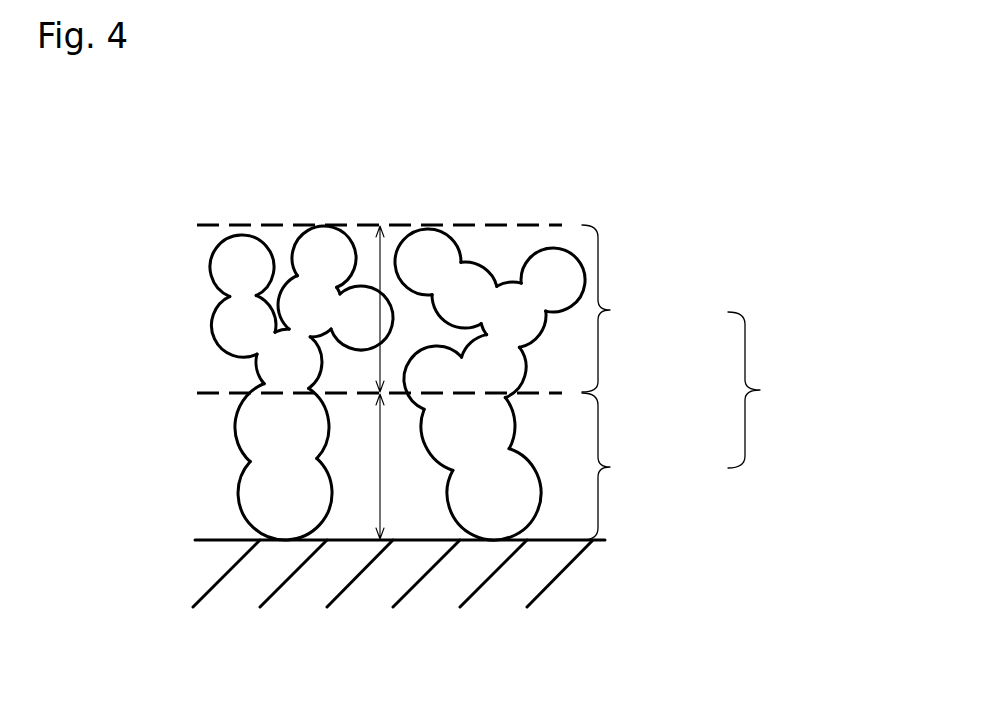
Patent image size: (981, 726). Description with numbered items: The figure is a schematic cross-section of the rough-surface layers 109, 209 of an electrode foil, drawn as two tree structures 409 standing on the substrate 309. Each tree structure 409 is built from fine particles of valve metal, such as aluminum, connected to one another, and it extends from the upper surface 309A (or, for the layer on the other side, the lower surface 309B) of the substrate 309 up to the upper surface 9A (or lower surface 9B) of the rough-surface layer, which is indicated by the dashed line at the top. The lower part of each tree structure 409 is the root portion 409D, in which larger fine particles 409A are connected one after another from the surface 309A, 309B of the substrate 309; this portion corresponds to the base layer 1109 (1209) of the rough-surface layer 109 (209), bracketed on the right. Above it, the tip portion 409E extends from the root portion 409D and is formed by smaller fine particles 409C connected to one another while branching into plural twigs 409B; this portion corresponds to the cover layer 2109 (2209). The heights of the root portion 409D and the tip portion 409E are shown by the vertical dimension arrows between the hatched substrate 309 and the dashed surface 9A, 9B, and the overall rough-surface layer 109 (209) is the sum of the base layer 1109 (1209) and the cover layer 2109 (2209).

The tree structure 409 is at (370, 175).
The fine particle 409A is at (247, 487).
The twig 409B is at (317, 298).
The fine particle 409C is at (280, 348).
The root portion 409D is at (378, 488).
The tip portion 409E is at (377, 277).
The upper surface 9A is at (317, 206).
The lower surface 9B is at (217, 224).
The substrate 309 is at (577, 575).
The upper surface 309A is at (335, 513).
The lower surface 309B is at (223, 540).
The rough-surface layer 109 is at (523, 382).
The rough-surface layer 209 is at (523, 382).
The cover layer 2109 is at (655, 308).
The cover layer 2209 is at (655, 308).
The base layer 1109 is at (461, 466).
The base layer 1209 is at (461, 466).